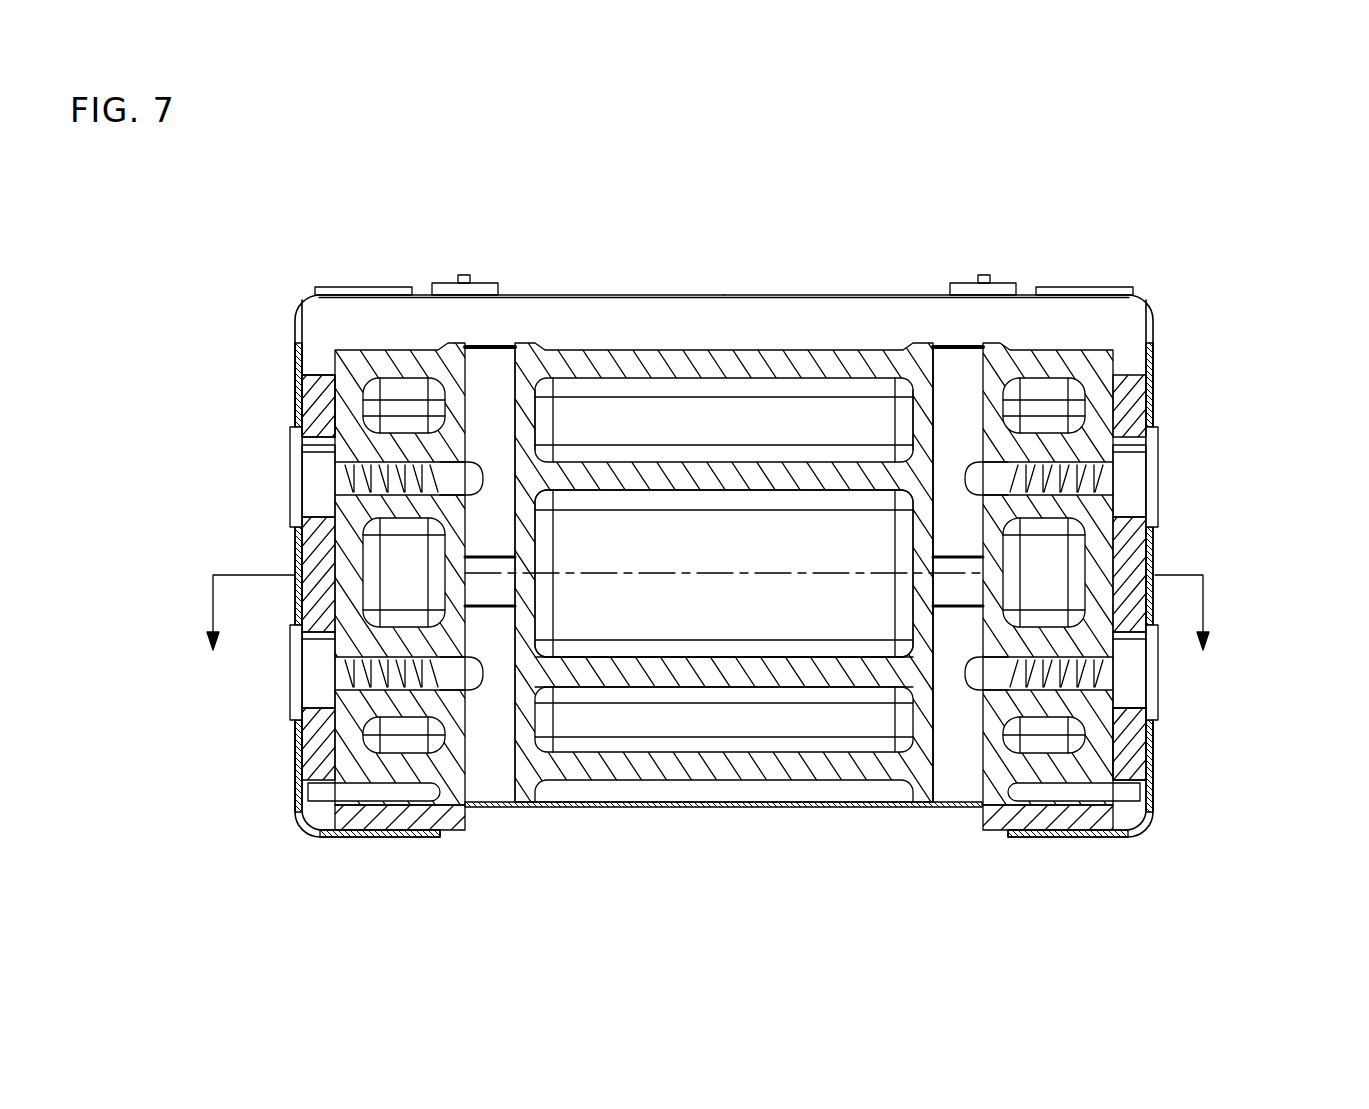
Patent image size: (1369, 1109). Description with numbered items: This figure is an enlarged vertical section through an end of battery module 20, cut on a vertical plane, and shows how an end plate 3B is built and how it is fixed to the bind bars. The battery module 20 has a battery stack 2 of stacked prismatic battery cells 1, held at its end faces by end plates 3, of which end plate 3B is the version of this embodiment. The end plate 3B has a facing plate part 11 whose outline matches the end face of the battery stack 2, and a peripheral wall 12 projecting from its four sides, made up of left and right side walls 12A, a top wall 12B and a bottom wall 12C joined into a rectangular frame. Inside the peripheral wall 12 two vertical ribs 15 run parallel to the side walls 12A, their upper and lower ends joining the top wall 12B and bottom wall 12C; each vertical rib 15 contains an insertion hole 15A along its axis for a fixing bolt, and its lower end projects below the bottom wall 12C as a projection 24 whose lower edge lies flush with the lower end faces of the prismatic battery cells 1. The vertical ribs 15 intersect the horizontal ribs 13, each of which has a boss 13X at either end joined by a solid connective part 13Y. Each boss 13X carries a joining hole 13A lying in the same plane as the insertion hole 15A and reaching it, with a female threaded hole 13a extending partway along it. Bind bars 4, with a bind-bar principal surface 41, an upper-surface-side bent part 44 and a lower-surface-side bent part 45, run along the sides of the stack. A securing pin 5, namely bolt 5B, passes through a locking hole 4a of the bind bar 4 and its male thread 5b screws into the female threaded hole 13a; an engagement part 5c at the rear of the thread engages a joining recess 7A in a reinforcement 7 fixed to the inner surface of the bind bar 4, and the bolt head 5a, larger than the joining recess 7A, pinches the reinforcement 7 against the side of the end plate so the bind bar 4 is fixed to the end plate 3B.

The battery module 20 is at (257, 212).
The battery stack 2 is at (420, 252).
The prismatic battery cell 1 is at (480, 315).
The end plate 3 is at (340, 335).
The end plate 3B is at (663, 524).
The joining hole 13A is at (300, 425).
The female threaded hole 13a is at (701, 588).
The horizontal rib 13 is at (699, 538).
The boss 13X is at (410, 380).
The connective part 13Y is at (968, 420).
The insertion hole 15A is at (490, 348).
The vertical rib 15 is at (525, 603).
The peripheral wall 12 is at (900, 168).
The side wall 12A is at (528, 560).
The top wall 12B is at (692, 363).
The bottom wall 12C is at (745, 770).
The facing plate part 11 is at (746, 566).
The upper-surface-side bent part 44 is at (1093, 287).
The lower-surface-side bent part 45 is at (1068, 836).
The projection 24 is at (440, 790).
The bind-bar principal surface 41 is at (684, 571).
The bind bar 4 is at (318, 570).
The locking hole 4a is at (303, 430).
The bolt 5B is at (730, 578).
The securing pin 5 is at (1265, 778).
The bolt head 5a is at (303, 447).
The male thread 5b is at (400, 482).
The engagement part 5c is at (372, 465).
The reinforcement 7 is at (300, 598).
The joining recess 7A is at (318, 735).